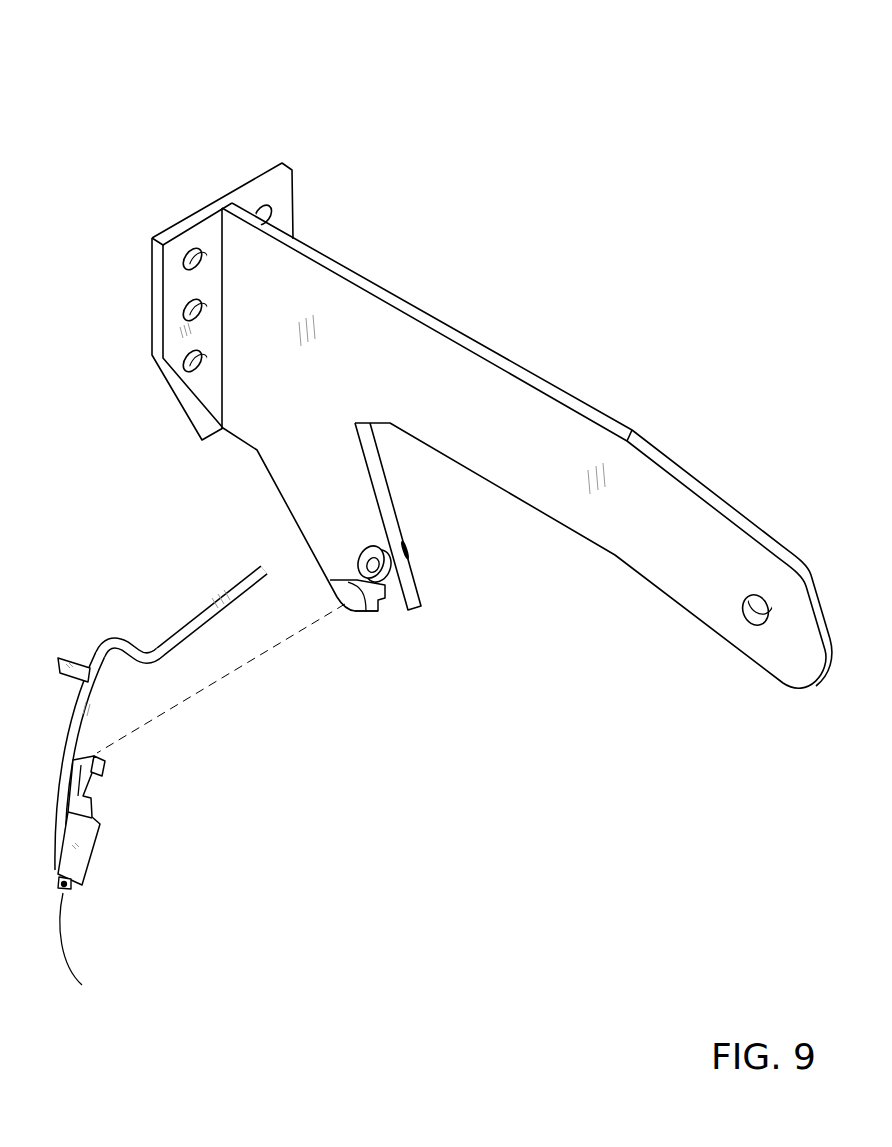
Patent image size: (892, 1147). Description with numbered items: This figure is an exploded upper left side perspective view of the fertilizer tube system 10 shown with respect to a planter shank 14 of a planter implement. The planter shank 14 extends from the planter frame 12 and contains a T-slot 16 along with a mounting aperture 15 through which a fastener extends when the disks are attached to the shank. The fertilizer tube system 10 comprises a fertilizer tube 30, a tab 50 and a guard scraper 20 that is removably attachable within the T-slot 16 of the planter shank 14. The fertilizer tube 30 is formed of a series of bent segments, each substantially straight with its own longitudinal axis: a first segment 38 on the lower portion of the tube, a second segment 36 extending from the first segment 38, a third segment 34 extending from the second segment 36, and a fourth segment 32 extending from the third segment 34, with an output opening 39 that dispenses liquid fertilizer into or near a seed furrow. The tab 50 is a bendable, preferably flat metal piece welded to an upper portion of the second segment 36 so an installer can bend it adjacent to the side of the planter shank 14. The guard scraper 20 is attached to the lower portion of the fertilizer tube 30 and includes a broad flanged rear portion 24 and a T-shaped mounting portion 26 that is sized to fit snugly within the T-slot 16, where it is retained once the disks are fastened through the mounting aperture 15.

The fertilizer tube system 10 is at (672, 101).
The planter frame 12 is at (438, 304).
The planter shank 14 is at (282, 497).
The mounting aperture 15 is at (376, 565).
The T-slot 16 is at (358, 604).
The guard scraper 20 is at (106, 811).
The rear portion 24 is at (90, 842).
The mounting portion 26 is at (106, 768).
The fertilizer tube 30 is at (101, 730).
The fourth segment 32 is at (232, 589).
The third segment 34 is at (133, 647).
The second segment 36 is at (97, 699).
The first segment 38 is at (75, 889).
The output opening 39 is at (91, 947).
The tab 50 is at (80, 660).